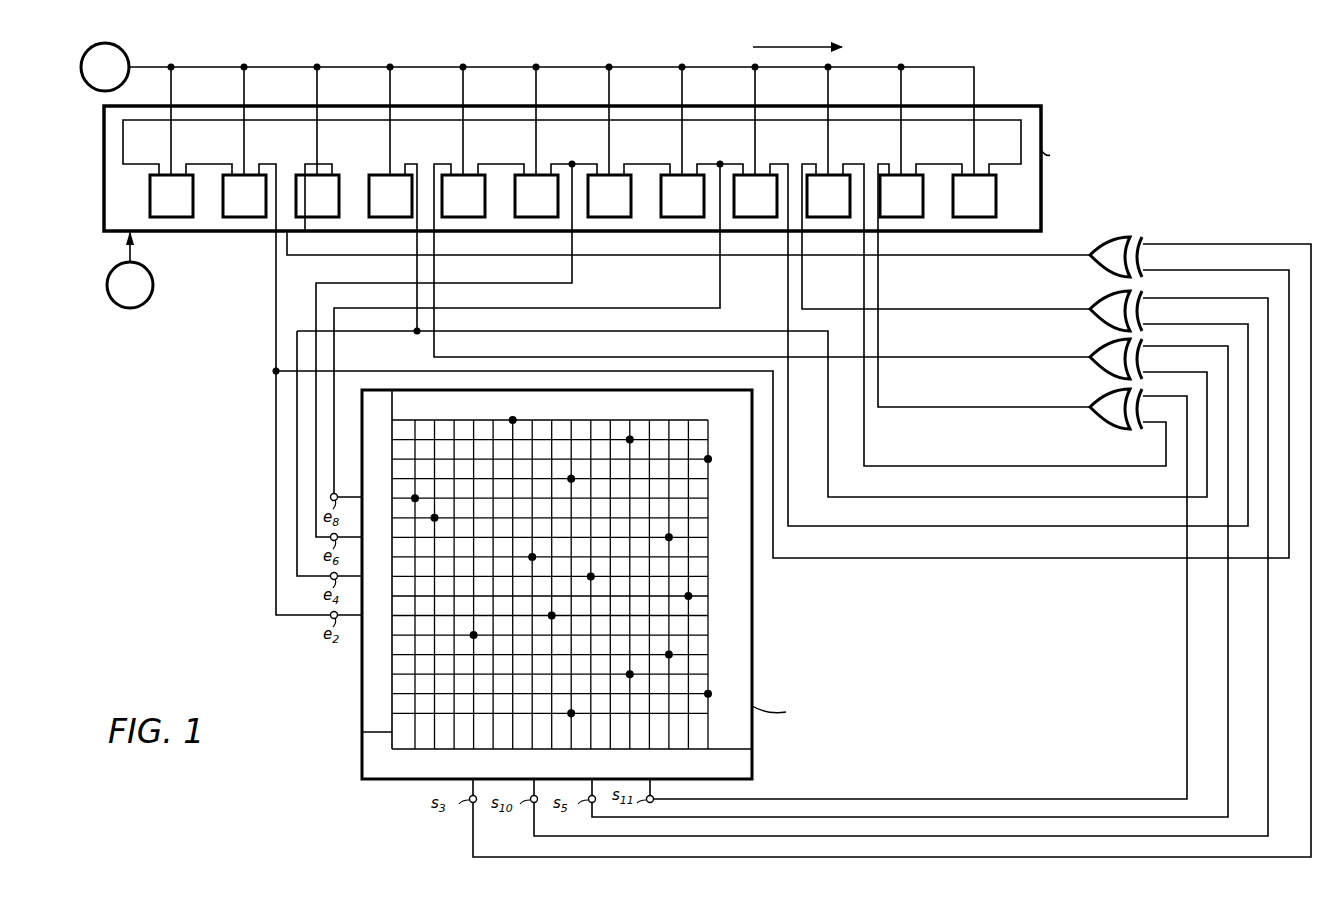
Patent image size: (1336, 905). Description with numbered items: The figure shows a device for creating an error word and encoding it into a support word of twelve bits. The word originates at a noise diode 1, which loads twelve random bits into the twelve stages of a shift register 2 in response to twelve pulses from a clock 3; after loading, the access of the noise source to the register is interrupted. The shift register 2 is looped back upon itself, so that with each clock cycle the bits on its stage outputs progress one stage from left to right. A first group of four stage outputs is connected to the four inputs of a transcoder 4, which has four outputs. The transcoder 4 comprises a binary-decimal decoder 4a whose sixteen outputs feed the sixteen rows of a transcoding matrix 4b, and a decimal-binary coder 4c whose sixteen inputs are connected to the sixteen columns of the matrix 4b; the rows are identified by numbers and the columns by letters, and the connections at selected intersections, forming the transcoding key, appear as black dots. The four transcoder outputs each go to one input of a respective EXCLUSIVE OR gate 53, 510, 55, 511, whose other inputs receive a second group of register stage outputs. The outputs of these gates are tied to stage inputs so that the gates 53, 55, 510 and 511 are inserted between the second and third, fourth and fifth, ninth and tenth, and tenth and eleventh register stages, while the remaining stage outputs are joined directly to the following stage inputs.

The noise diode 1 is at (130, 308).
The shift register 2 is at (568, 118).
The clock 3 is at (115, 44).
The transcoder 4 is at (601, 584).
The binary-decimal decoder 4a is at (375, 712).
The transcoding matrix 4b is at (445, 662).
The decimal-binary coder 4c is at (752, 768).
The EXCLUSIVE OR gate 53 is at (1105, 240).
The EXCLUSIVE OR gate 510 is at (1093, 307).
The EXCLUSIVE OR gate 55 is at (1097, 357).
The EXCLUSIVE OR gate 511 is at (1100, 407).